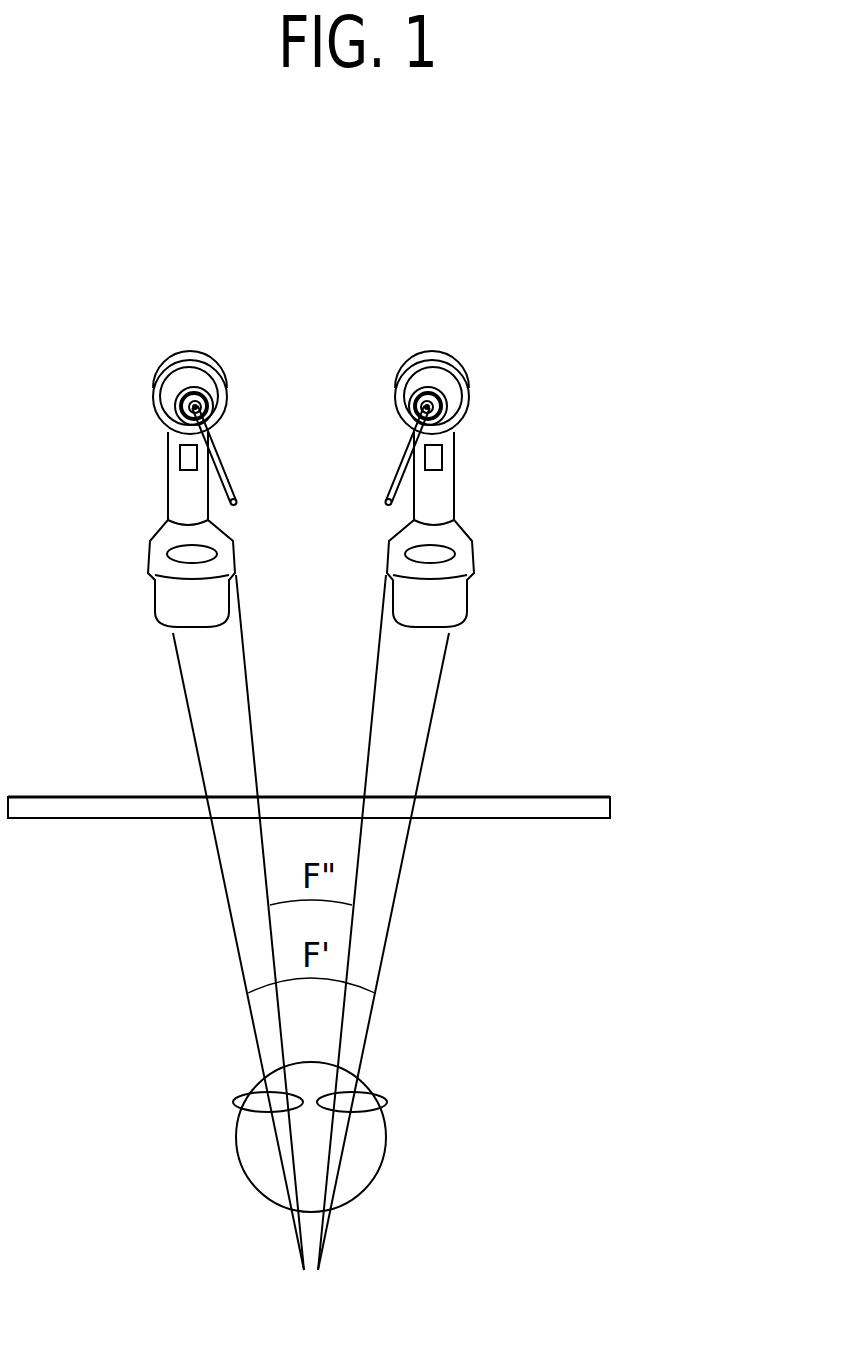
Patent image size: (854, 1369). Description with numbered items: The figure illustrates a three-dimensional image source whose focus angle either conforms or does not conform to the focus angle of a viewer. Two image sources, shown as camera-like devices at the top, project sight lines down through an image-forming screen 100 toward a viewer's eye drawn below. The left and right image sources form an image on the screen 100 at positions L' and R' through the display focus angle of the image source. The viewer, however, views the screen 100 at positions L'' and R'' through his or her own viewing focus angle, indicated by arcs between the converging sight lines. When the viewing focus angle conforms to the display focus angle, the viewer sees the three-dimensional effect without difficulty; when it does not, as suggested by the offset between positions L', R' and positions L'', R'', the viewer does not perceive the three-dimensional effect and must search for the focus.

The screen 100 is at (608, 803).
The left image-forming position L' is at (127, 738).
The left viewing position L'' is at (182, 738).
The right image-forming position R' is at (492, 738).
The right viewing position R'' is at (445, 738).